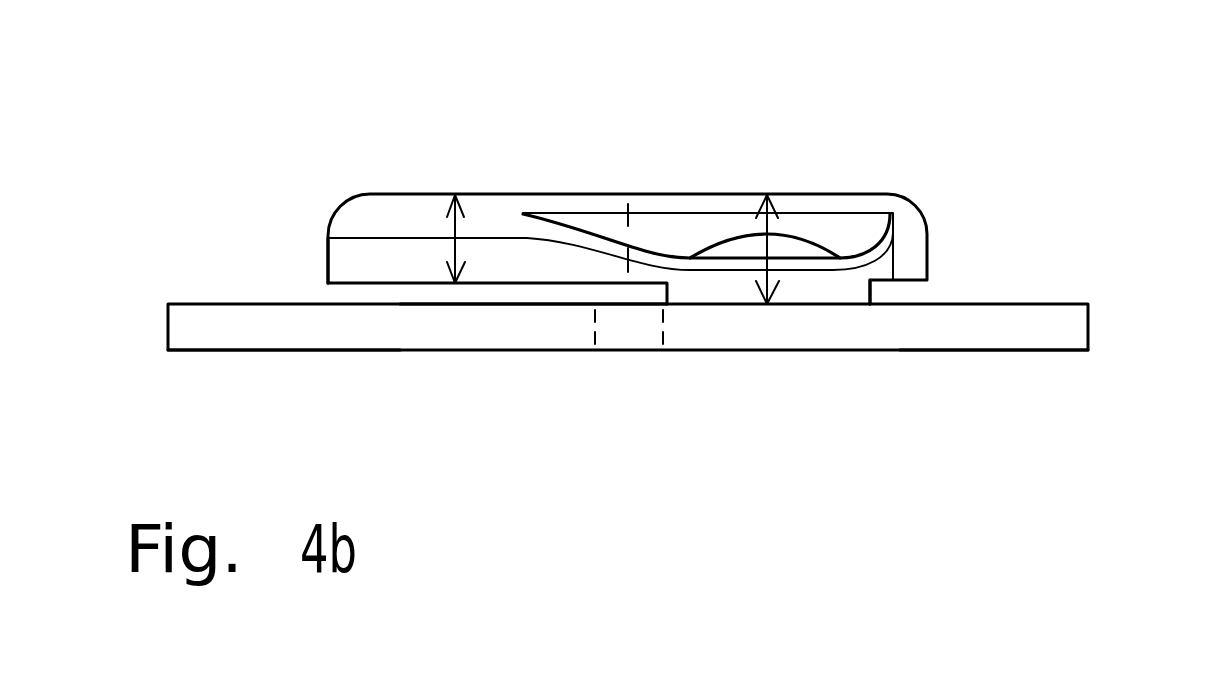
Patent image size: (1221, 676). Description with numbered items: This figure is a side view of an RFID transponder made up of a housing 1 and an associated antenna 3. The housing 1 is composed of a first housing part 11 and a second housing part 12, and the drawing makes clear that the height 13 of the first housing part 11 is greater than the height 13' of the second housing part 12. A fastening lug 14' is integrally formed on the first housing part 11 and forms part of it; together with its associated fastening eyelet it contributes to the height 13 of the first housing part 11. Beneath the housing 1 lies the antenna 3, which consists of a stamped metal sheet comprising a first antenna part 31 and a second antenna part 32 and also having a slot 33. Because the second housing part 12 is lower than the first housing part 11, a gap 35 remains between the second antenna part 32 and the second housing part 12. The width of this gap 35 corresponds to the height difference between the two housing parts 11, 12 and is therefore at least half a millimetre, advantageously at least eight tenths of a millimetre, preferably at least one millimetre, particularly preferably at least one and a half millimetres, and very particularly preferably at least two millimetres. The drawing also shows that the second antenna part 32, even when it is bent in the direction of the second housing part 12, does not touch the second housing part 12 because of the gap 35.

The housing 1 is at (917, 167).
The first housing part 11 is at (913, 243).
The second housing part 12 is at (367, 217).
The height of the first housing part 13 is at (706, 191).
The height of the second housing part 13' is at (393, 185).
The fastening lug 14' is at (655, 364).
The antenna 3 is at (1108, 322).
The first antenna part 31 is at (1025, 328).
The second antenna part 32 is at (313, 333).
The slot 33 is at (632, 337).
The gap 35 is at (528, 295).